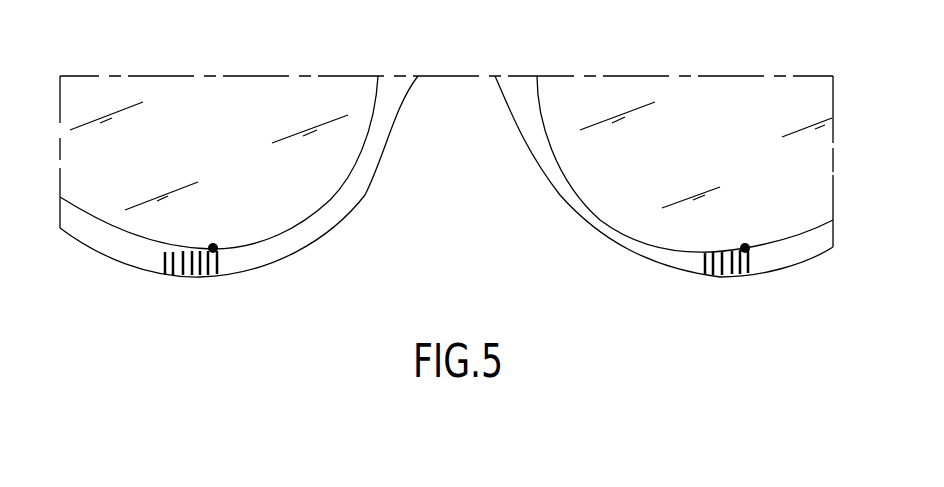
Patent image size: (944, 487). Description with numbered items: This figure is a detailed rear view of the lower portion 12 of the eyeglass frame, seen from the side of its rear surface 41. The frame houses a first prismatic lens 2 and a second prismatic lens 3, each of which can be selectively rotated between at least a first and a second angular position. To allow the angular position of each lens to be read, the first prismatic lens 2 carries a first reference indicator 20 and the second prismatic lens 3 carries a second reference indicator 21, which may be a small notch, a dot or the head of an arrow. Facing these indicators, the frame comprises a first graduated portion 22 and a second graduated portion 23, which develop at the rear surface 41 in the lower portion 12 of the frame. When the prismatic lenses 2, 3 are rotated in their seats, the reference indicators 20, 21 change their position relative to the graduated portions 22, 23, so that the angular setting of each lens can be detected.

The first prismatic lens 2 is at (633, 151).
The second prismatic lens 3 is at (125, 128).
The lower portion 12 is at (418, 212).
The first reference indicator 20 is at (745, 248).
The second reference indicator 21 is at (213, 248).
The first graduated portion 22 is at (726, 290).
The second graduated portion 23 is at (182, 288).
The rear surface 41 is at (548, 160).